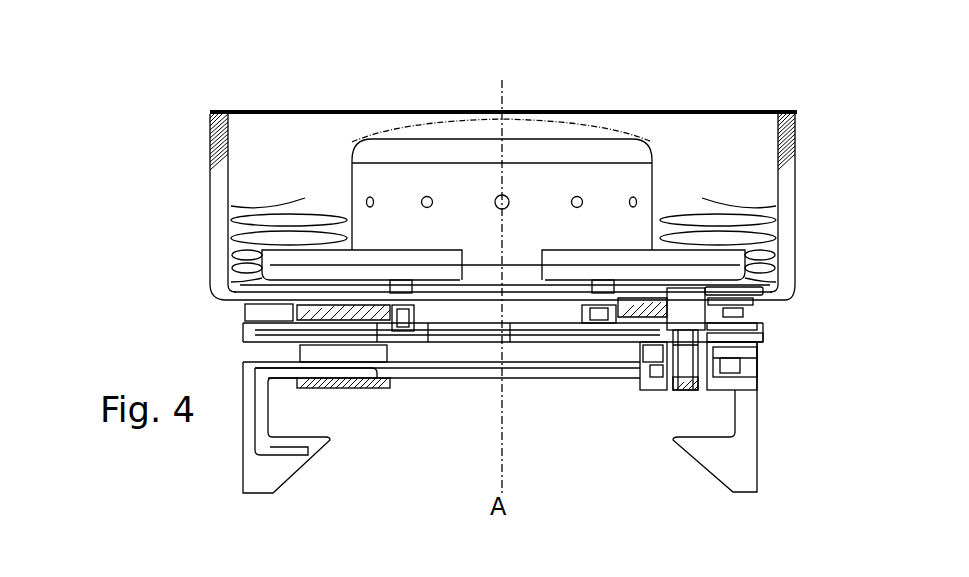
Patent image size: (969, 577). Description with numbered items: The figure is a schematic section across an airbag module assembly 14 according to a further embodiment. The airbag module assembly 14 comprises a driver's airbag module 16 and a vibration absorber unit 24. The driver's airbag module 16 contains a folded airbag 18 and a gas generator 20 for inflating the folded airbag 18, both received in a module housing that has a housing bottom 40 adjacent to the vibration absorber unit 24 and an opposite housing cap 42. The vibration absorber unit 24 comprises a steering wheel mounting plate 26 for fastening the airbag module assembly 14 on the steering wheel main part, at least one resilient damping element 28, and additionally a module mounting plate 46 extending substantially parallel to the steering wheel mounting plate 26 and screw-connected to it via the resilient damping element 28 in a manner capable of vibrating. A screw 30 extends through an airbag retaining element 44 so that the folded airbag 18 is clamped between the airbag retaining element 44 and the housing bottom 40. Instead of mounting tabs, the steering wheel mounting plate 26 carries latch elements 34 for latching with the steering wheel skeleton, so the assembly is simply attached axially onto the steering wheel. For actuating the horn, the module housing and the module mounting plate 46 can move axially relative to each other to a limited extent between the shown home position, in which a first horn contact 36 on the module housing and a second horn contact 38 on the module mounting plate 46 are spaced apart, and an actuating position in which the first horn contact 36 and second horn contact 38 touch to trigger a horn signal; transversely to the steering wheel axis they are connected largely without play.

The airbag module assembly 14 is at (609, 459).
The driver's airbag module 16 is at (132, 212).
The folded airbag 18 is at (727, 205).
The gas generator 20 is at (446, 150).
The vibration absorber unit 24 is at (210, 353).
The steering wheel mounting plate 26 is at (414, 370).
The resilient damping element 28 is at (204, 165).
The screw 30 is at (683, 356).
The latch element 34 is at (250, 468).
The first horn contact 36 is at (262, 308).
The second horn contact 38 is at (283, 305).
The housing bottom 40 is at (758, 294).
The housing cap 42 is at (683, 110).
The airbag retaining element 44 is at (456, 262).
The module mounting plate 46 is at (755, 330).